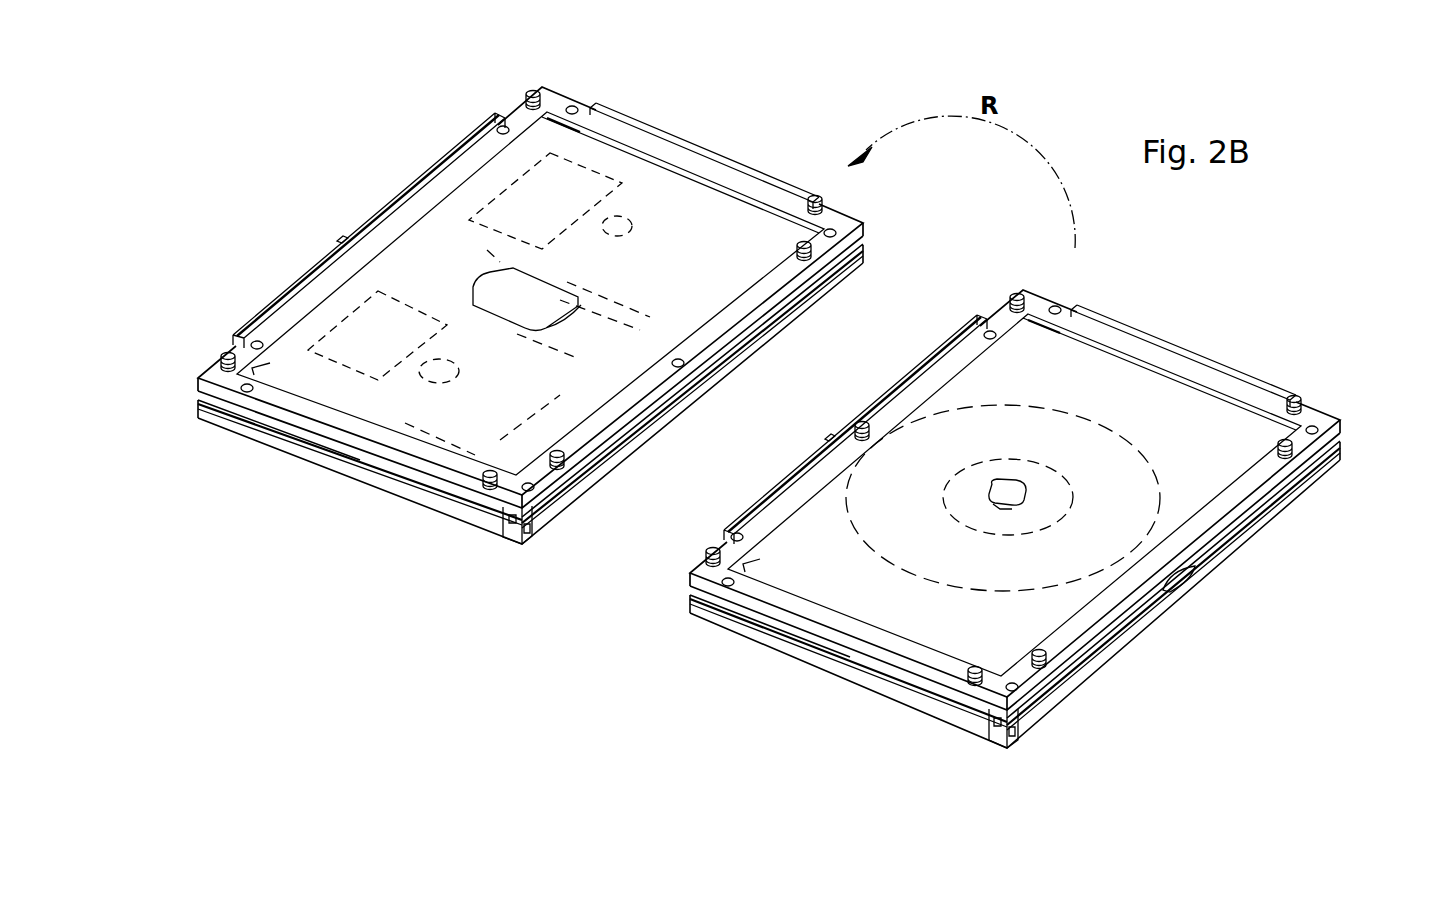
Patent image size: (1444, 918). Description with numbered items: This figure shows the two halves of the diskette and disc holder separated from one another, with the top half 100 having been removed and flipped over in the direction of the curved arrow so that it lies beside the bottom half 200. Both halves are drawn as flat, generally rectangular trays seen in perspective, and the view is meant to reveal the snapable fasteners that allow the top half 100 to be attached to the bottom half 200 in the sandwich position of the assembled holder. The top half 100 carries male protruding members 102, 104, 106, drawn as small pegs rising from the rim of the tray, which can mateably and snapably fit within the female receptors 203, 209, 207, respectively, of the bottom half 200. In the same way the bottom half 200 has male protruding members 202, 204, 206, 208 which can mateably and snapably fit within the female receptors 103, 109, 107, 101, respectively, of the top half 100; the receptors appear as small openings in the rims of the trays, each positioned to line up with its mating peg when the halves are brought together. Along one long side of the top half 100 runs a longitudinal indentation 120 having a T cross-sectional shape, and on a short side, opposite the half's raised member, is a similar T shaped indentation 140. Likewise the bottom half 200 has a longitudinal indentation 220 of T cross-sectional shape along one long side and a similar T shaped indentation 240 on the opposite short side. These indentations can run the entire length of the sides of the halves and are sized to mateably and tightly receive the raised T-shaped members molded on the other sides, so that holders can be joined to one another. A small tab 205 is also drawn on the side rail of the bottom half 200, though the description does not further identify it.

The top half 100 is at (335, 463).
The female receptor 101 is at (712, 430).
The male protruding member 102 is at (529, 91).
The female receptor 103 is at (580, 106).
The male protruding member 104 is at (808, 256).
The male protruding member 106 is at (215, 378).
The female receptor 107 is at (246, 394).
The female receptor 109 is at (500, 125).
The longitudinal indentation 120 is at (508, 547).
The T shaped indentation 140 is at (531, 530).
The bottom half 200 is at (935, 712).
The male protruding member 202 is at (1015, 296).
The female receptor 203 is at (1062, 308).
The male protruding member 204 is at (1290, 455).
The rail tab 205 is at (1196, 580).
The male protruding member 206 is at (703, 566).
The female receptor 207 is at (724, 596).
The male protruding member 208 is at (852, 423).
The female receptor 209 is at (985, 332).
The longitudinal indentation 220 is at (1340, 448).
The T shaped indentation 240 is at (1018, 740).